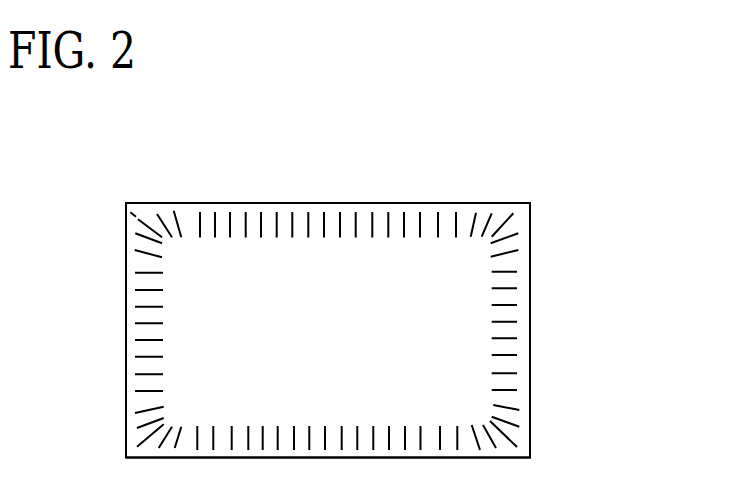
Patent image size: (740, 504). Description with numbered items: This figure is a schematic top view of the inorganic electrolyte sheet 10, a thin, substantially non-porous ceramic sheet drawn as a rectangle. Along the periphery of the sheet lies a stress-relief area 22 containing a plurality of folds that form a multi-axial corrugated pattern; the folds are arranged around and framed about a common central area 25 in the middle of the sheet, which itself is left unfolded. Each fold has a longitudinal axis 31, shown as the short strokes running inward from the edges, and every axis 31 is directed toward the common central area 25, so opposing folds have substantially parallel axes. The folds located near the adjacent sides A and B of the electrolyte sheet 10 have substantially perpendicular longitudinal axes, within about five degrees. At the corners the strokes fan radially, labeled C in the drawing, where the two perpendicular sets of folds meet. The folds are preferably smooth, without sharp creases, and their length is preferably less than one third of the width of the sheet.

The electrolyte sheet 10 is at (529, 125).
The stress-relief area 22 is at (493, 405).
The common central area 25 is at (408, 338).
The longitudinal axis 31 is at (200, 233).
The side A is at (377, 202).
The side B is at (126, 307).
The corner region C is at (128, 203).